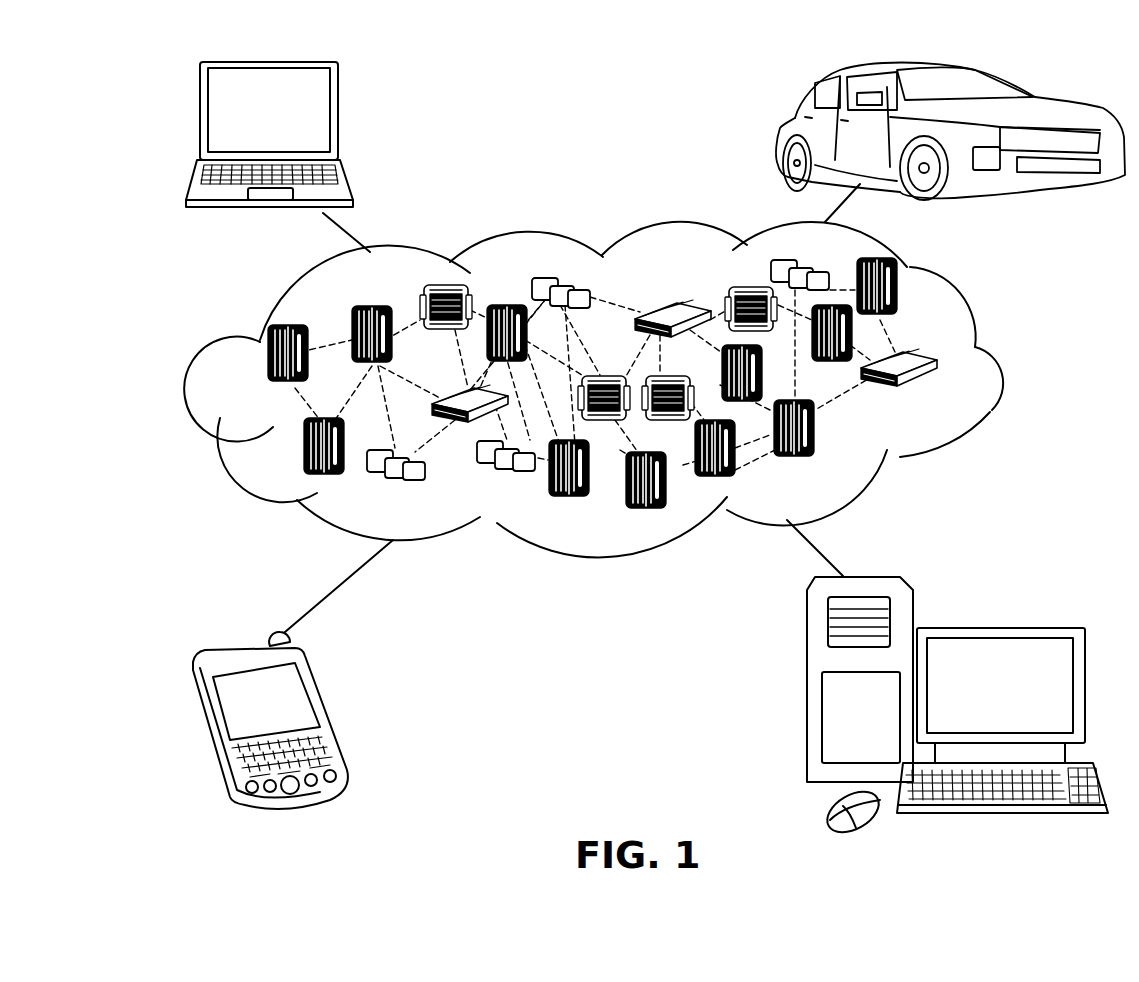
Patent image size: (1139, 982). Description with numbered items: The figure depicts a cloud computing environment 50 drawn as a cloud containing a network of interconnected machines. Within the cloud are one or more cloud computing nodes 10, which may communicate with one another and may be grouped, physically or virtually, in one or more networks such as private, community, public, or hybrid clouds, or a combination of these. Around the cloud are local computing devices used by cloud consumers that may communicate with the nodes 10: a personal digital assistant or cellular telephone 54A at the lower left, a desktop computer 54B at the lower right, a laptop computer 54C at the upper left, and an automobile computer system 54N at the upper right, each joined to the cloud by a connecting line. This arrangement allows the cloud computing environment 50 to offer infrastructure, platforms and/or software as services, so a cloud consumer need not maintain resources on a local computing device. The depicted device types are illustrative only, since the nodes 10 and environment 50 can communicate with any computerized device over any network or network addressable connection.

The cloud computing nodes 10 is at (944, 393).
The cloud computing environment 50 is at (999, 364).
The personal digital assistant (PDA) or cellular telephone 54A is at (330, 713).
The desktop computer 54B is at (995, 627).
The laptop computer 54C is at (340, 118).
The automobile computer system 54N is at (777, 133).